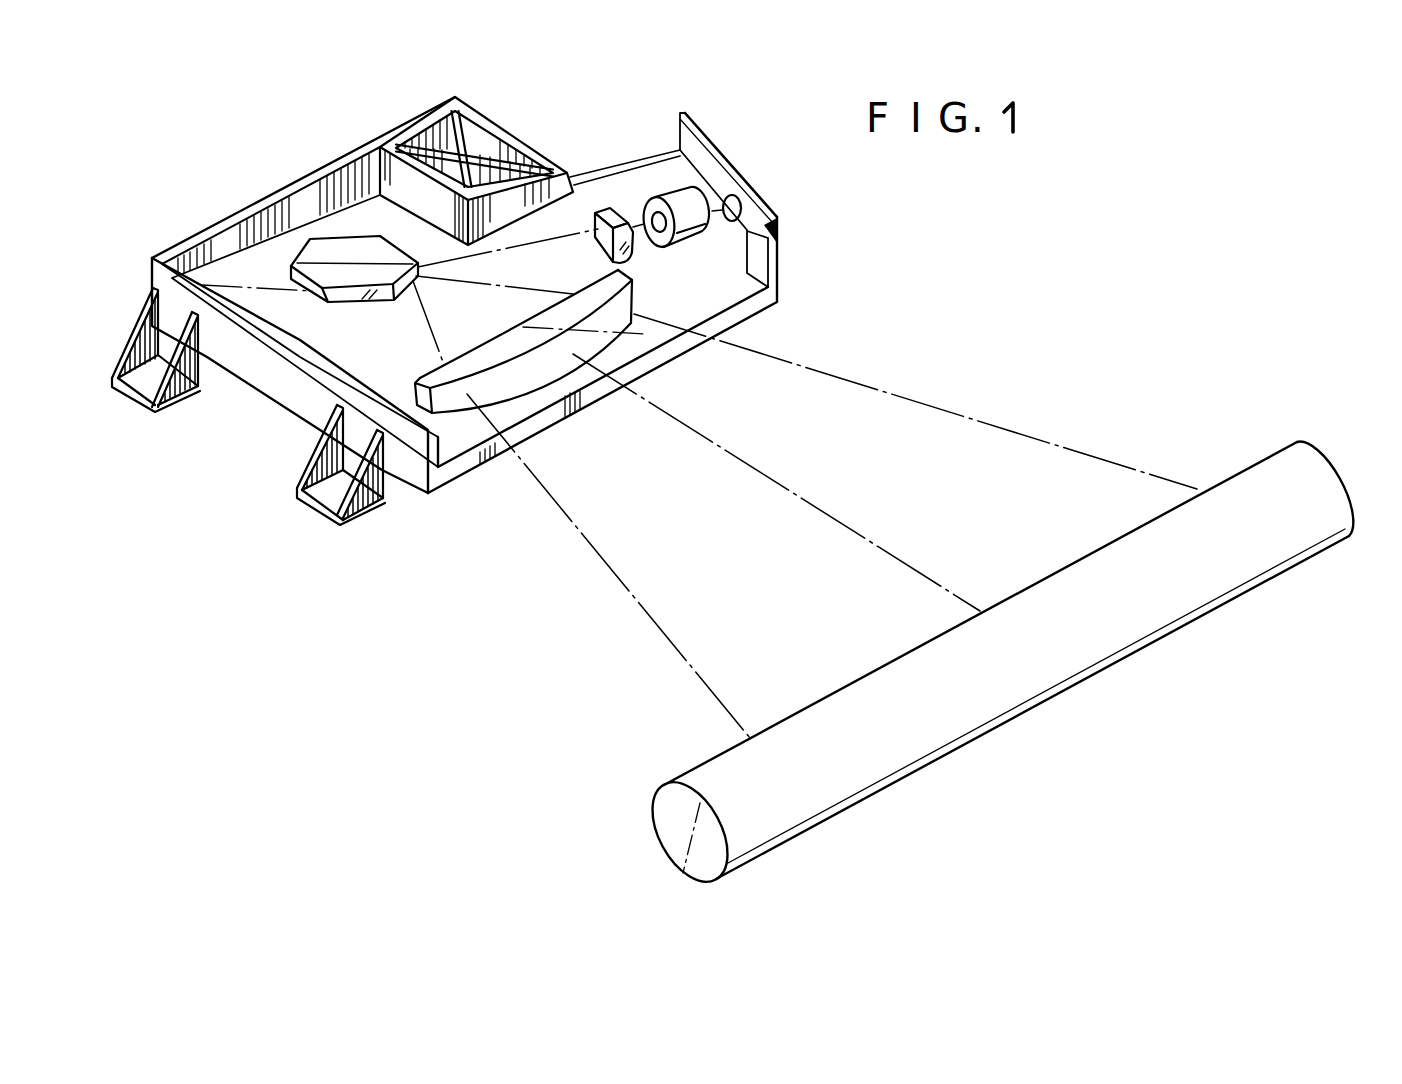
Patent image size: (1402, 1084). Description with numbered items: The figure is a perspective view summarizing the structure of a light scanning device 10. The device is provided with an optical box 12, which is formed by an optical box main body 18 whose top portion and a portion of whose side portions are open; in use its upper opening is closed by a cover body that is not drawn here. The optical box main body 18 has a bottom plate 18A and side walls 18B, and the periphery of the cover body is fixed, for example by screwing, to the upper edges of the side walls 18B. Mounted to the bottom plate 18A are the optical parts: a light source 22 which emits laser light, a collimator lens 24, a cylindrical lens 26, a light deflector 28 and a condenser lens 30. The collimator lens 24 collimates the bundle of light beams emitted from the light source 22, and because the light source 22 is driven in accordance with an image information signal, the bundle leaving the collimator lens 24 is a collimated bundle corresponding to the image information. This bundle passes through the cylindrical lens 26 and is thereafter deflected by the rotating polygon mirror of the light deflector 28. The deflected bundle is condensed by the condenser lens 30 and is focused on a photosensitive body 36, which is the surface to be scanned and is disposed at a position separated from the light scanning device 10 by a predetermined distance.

The light scanning device 10 is at (726, 66).
The optical box 12 is at (282, 375).
The optical box main body 18 is at (223, 218).
The bottom plate 18A is at (392, 357).
The side walls 18B is at (290, 207).
The light source 22 is at (735, 195).
The collimator lens 24 is at (680, 208).
The cylindrical lens 26 is at (615, 213).
The light deflector 28 is at (352, 252).
The condenser lens 30 is at (500, 350).
The photosensitive body 36 is at (705, 783).